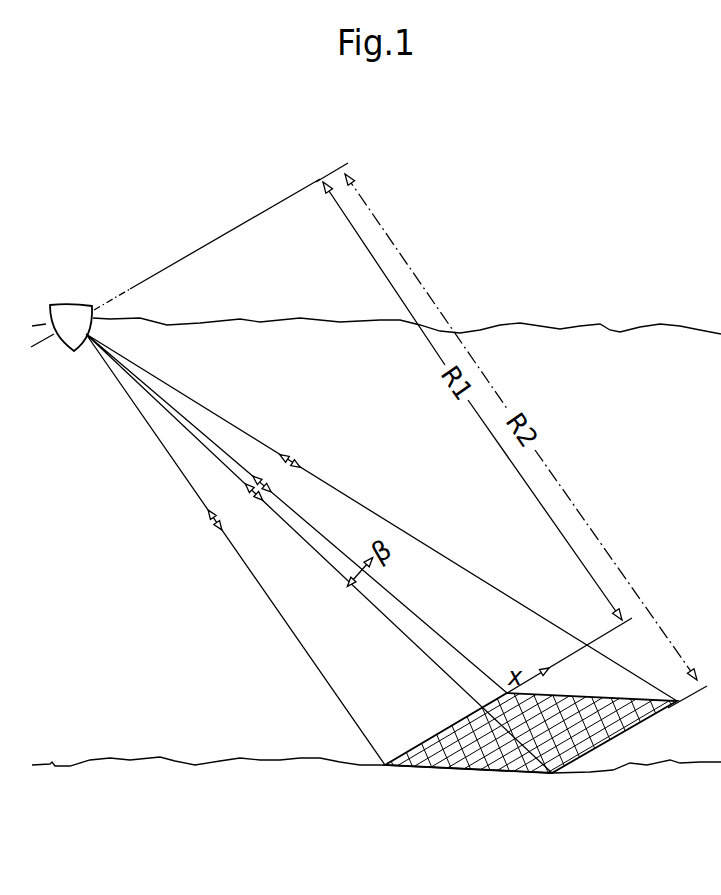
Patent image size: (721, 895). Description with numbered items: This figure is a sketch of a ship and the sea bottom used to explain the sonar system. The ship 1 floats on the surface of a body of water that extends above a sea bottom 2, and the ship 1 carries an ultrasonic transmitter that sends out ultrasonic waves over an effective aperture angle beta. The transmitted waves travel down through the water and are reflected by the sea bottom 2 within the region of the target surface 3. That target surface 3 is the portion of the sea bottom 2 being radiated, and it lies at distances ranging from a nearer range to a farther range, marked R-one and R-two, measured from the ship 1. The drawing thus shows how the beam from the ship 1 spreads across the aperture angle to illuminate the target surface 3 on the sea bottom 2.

The ship 1 is at (73, 306).
The sea bottom 2 is at (202, 769).
The target surface 3 is at (492, 766).